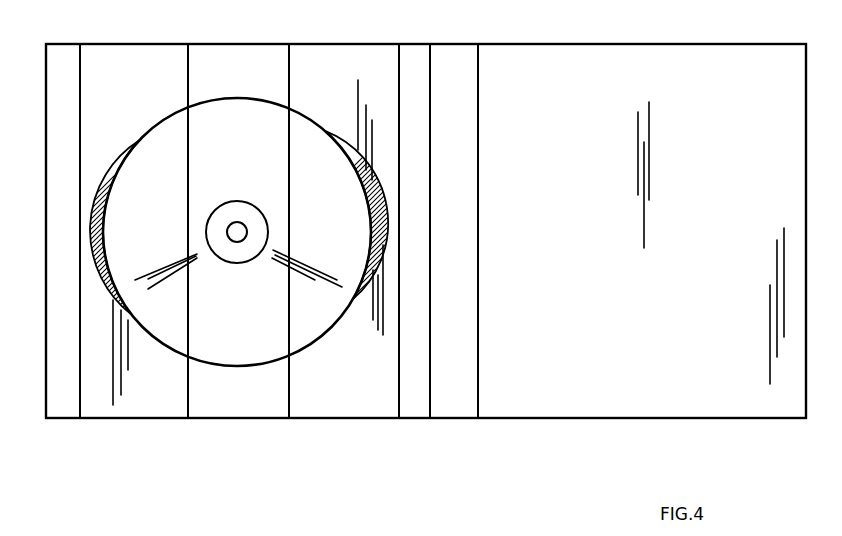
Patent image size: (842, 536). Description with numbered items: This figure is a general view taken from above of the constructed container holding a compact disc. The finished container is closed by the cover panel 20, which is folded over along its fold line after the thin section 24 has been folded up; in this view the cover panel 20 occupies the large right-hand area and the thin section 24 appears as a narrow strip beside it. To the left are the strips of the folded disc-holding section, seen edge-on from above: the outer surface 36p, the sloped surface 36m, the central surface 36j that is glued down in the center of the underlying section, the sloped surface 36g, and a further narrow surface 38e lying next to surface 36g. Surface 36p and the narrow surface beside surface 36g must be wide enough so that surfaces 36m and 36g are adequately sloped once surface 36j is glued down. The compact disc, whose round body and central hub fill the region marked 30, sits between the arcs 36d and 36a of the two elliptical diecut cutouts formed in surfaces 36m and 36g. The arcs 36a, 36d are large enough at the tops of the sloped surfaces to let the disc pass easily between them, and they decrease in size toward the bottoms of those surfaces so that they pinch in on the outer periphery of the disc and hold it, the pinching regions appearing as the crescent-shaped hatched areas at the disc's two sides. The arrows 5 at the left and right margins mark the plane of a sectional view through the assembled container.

The cover panel 20 is at (644, 43).
The thin section 24 is at (455, 66).
The disk 30 is at (242, 43).
The arc 36a is at (372, 178).
The arc 36d is at (133, 143).
The surface 36p is at (67, 411).
The surface 36m is at (161, 409).
The surface 36j is at (269, 407).
The surface 36g is at (354, 405).
The strip 38e is at (418, 406).
The section line 5- 5 is at (30, 220).